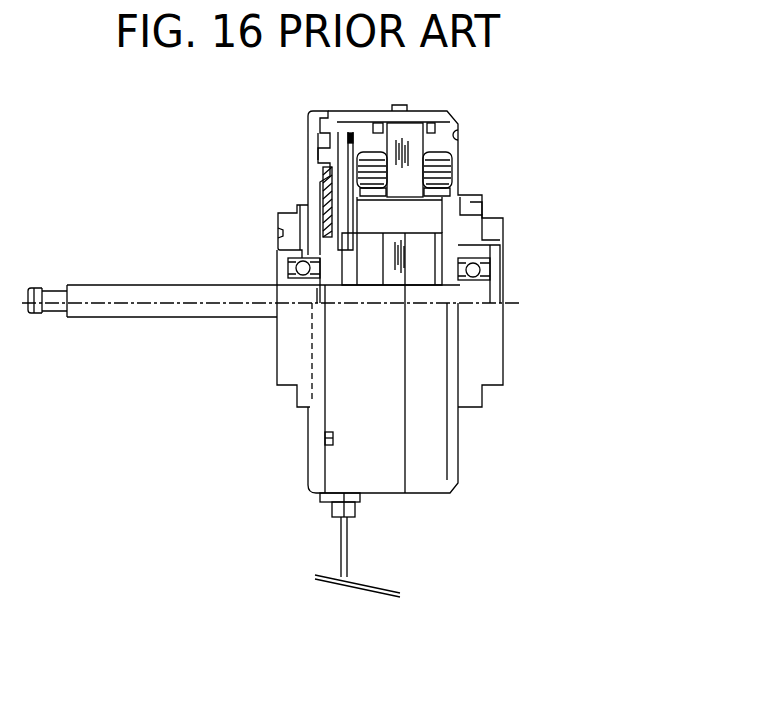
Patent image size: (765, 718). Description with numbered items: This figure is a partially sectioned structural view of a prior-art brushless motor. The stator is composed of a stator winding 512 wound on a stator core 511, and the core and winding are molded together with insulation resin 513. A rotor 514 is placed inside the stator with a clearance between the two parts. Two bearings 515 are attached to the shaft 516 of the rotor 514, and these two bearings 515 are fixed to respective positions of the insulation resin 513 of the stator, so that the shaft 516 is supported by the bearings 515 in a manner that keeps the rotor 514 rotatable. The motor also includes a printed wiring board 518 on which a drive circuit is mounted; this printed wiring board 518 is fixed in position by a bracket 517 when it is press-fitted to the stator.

The stator core 511 is at (408, 161).
The stator winding 512 is at (386, 182).
The insulation resin 513 is at (450, 118).
The rotor 514 is at (372, 176).
The bearings 515 is at (472, 278).
The shaft 516 is at (158, 307).
The bracket 517 is at (308, 122).
The printed wiring board 518 is at (345, 196).